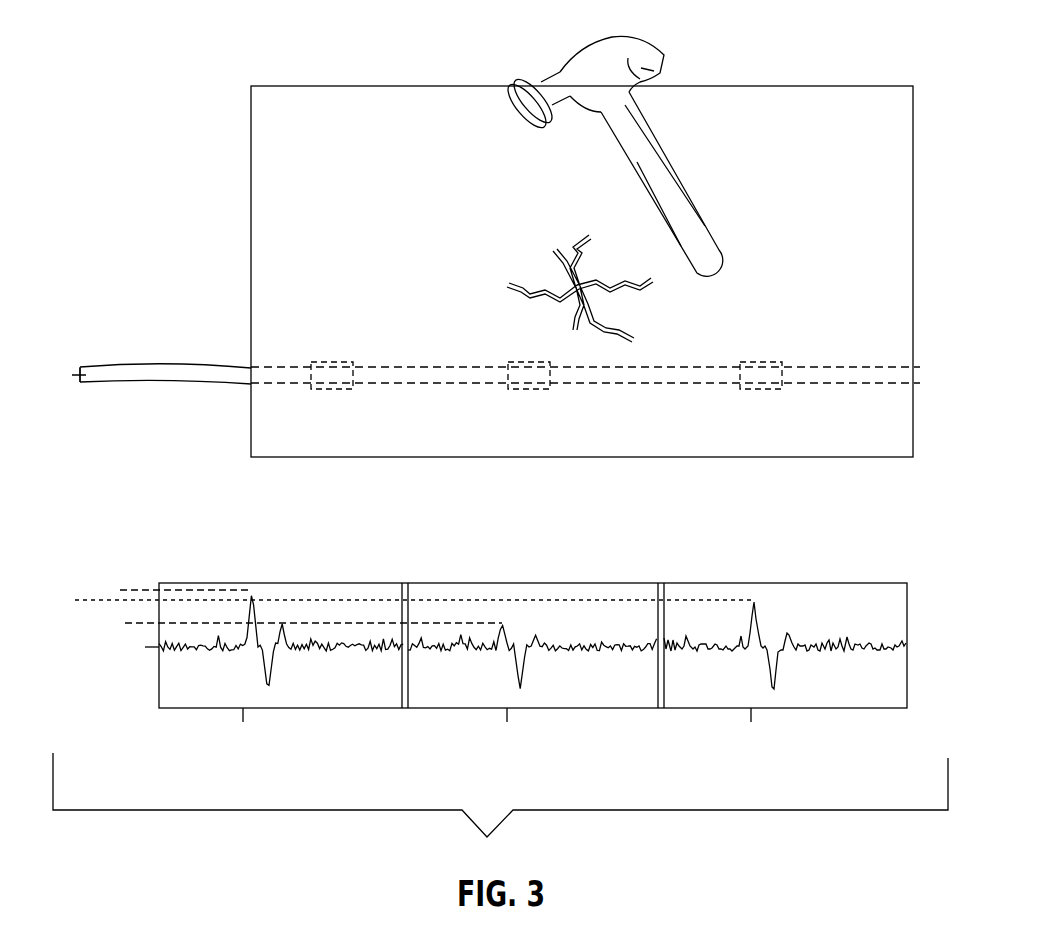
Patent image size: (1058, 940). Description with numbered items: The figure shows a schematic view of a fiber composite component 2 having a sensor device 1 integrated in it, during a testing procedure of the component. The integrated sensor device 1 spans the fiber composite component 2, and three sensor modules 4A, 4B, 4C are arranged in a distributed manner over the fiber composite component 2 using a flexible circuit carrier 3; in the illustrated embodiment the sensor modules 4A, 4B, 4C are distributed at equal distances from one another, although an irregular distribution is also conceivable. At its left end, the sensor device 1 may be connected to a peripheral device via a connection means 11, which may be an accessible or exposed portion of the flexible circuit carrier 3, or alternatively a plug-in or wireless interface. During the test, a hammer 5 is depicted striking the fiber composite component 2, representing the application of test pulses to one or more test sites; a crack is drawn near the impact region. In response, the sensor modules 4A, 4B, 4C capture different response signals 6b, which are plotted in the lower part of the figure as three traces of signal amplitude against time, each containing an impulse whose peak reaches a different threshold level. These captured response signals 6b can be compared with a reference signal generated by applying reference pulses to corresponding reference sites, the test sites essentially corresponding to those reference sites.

The sensor device 1 is at (137, 368).
The fiber composite component 2 is at (251, 148).
The flexible circuit carrier 3 is at (883, 372).
The sensor module 4A is at (332, 392).
The sensor module 4B is at (529, 392).
The sensor module 4C is at (761, 392).
The hammer impact source 5 is at (640, 108).
The response signals 6b is at (943, 661).
The connection means 11 is at (75, 390).